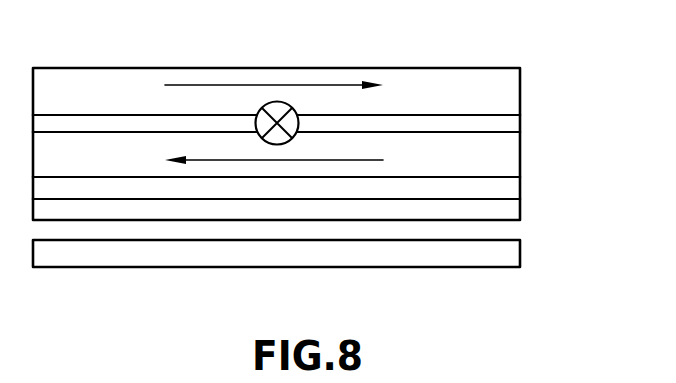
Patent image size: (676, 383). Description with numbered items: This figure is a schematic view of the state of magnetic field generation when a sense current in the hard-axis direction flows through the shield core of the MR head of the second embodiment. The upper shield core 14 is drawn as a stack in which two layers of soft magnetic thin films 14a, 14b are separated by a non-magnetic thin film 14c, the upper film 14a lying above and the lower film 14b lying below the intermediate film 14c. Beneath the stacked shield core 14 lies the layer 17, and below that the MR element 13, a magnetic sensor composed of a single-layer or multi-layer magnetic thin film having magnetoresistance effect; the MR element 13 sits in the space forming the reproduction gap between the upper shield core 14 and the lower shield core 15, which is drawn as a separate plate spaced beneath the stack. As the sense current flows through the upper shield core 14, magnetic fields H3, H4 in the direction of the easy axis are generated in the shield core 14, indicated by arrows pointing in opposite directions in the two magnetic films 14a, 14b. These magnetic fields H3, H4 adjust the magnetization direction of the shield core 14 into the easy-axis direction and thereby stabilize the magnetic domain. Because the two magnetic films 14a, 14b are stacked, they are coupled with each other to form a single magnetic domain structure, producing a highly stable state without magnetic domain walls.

The upper shield core 14 is at (335, 122).
The soft magnetic thin film 14a is at (511, 91).
The non-magnetic thin film 14c is at (511, 122).
The soft magnetic thin film 14b is at (313, 154).
The underlayer 17 is at (511, 186).
The MR element 13 is at (511, 209).
The lower shield core 15 is at (511, 253).
The magnetic field H3 is at (271, 85).
The magnetic field H4 is at (273, 162).